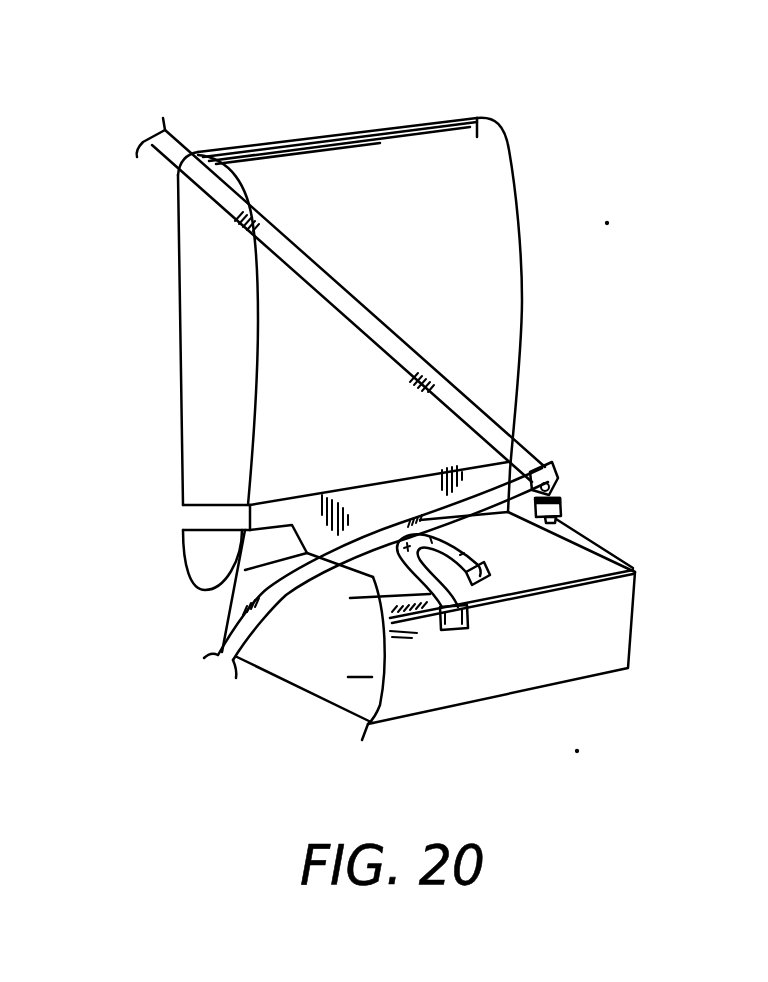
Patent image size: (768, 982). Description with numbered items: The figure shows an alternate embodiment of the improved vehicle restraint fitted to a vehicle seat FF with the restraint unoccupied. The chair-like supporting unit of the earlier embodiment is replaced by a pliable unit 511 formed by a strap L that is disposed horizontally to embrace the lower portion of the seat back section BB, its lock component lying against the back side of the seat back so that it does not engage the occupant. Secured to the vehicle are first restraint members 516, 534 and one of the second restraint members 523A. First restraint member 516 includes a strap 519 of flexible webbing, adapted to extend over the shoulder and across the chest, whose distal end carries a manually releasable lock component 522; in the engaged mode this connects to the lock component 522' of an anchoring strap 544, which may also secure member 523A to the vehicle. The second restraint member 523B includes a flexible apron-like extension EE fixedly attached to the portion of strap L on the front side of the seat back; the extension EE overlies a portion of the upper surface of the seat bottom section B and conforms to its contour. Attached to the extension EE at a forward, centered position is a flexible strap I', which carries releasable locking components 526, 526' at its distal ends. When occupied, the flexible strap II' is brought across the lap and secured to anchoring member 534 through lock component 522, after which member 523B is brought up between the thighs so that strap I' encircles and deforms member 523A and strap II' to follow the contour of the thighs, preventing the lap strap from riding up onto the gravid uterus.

The vehicle seat FF is at (172, 376).
The seat back section BB is at (478, 117).
The strap L is at (172, 513).
The pliable unit 511 is at (218, 548).
The first restraint member 516 is at (388, 312).
The strap 519 is at (267, 242).
The second restraint member 523A is at (338, 568).
The flexible strap II' is at (268, 607).
The lock component 522 is at (590, 458).
The lock component 522' is at (618, 486).
The first restraint member 534 is at (578, 504).
The anchoring strap 544 is at (558, 521).
The second restraint member 523B is at (493, 552).
The seat bottom section B is at (436, 618).
The apron-like extension EE is at (376, 722).
The locking component 526' is at (518, 631).
The locking component 526 is at (486, 678).
The flexible strap I' is at (430, 688).